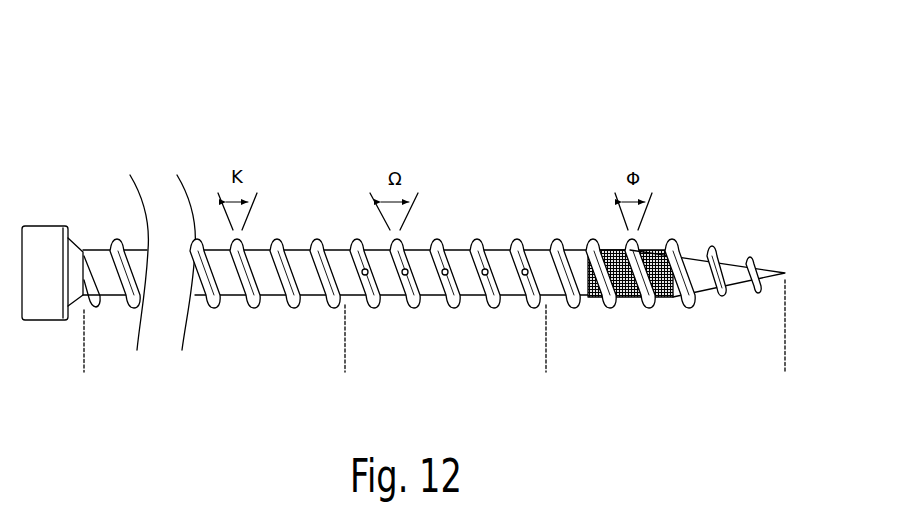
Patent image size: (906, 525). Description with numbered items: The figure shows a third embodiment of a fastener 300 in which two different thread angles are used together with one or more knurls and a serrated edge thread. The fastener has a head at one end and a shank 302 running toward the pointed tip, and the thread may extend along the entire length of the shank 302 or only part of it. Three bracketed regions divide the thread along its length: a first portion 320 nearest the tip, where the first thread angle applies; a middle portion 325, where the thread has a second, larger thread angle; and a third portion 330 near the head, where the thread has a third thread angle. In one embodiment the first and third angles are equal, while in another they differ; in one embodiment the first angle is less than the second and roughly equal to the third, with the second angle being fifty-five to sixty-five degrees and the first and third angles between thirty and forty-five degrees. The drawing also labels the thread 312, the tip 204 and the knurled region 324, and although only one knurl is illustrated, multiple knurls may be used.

The fastener 300 is at (155, 108).
The shank 302 is at (305, 267).
The thread 312 is at (467, 249).
The tip 204 is at (785, 272).
The thread region 324 is at (666, 298).
The third portion of the thread 330 is at (84, 372).
The portion of the thread 325 is at (546, 372).
The first portion of the thread 320 is at (785, 372).